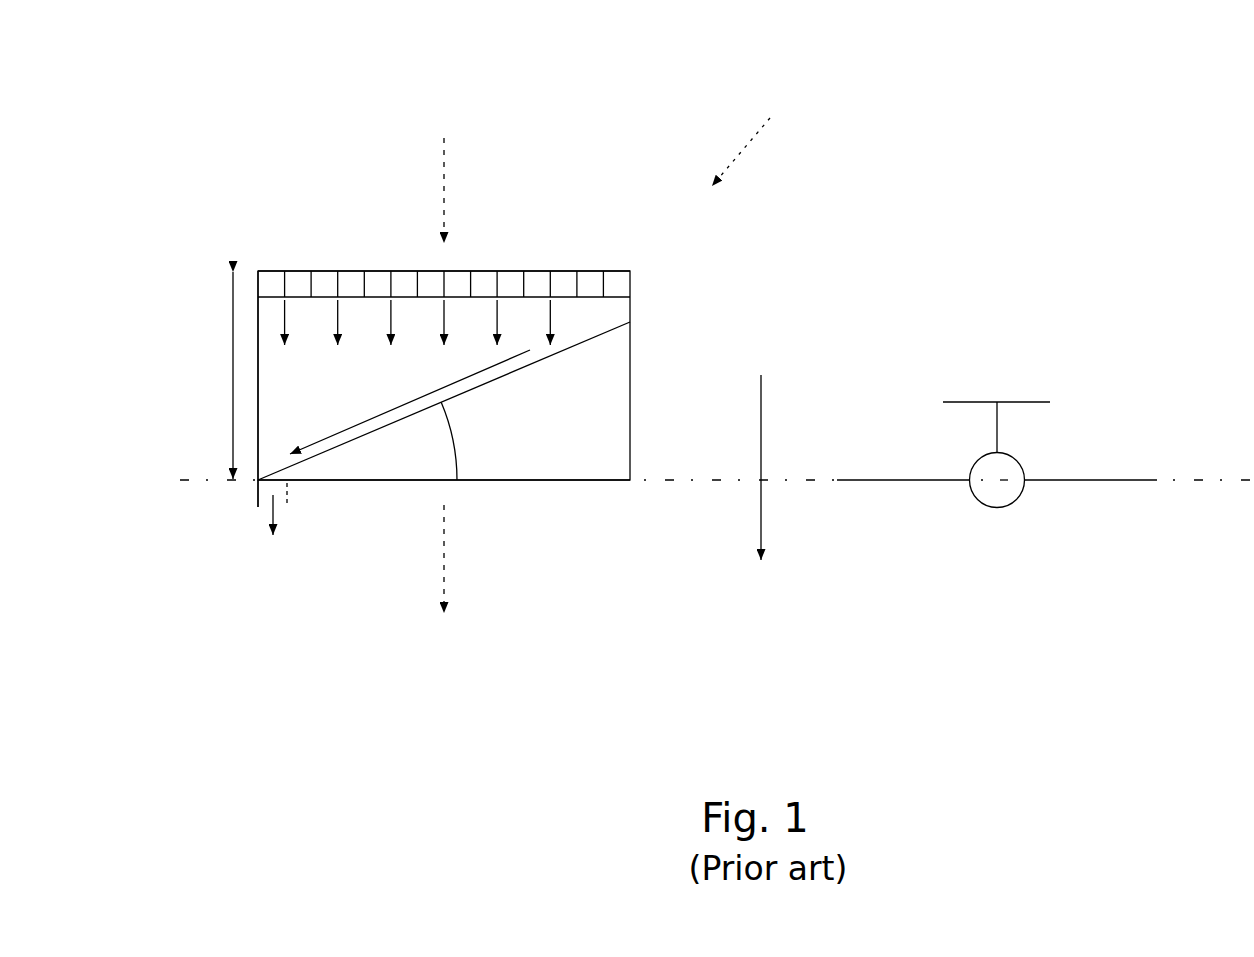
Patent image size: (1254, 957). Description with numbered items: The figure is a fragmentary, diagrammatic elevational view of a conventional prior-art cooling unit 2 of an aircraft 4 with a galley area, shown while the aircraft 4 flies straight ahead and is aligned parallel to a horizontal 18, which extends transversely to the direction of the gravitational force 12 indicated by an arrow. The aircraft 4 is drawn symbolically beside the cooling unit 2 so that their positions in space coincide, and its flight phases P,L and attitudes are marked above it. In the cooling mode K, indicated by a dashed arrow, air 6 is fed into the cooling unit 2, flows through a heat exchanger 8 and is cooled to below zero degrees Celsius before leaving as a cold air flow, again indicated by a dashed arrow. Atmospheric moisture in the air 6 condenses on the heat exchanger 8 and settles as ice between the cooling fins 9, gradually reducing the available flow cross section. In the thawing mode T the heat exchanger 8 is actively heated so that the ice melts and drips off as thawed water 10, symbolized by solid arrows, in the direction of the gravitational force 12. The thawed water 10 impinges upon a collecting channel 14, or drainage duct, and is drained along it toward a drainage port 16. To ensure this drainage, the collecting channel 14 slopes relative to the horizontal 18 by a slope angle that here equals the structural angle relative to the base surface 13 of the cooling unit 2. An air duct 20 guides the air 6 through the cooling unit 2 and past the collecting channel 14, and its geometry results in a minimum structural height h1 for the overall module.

The cooling unit 2 is at (260, 138).
The thawing mode T is at (225, 198).
The cooling mode K is at (754, 136).
The air 6 is at (444, 158).
The heat exchanger 8 is at (630, 283).
The cooling fins 9 is at (572, 285).
The thawed water 10 is at (443, 323).
The air duct 20 is at (258, 368).
The minimum structural height h1 is at (214, 375).
The collecting channel 14 is at (573, 350).
The base surface 13 is at (583, 480).
The drainage port 16 is at (262, 491).
The gravitational force 12 is at (761, 422).
The horizontal 18 is at (1202, 482).
The aircraft 4 is at (1022, 463).
The flight phases and flight attitudes P,L is at (989, 382).